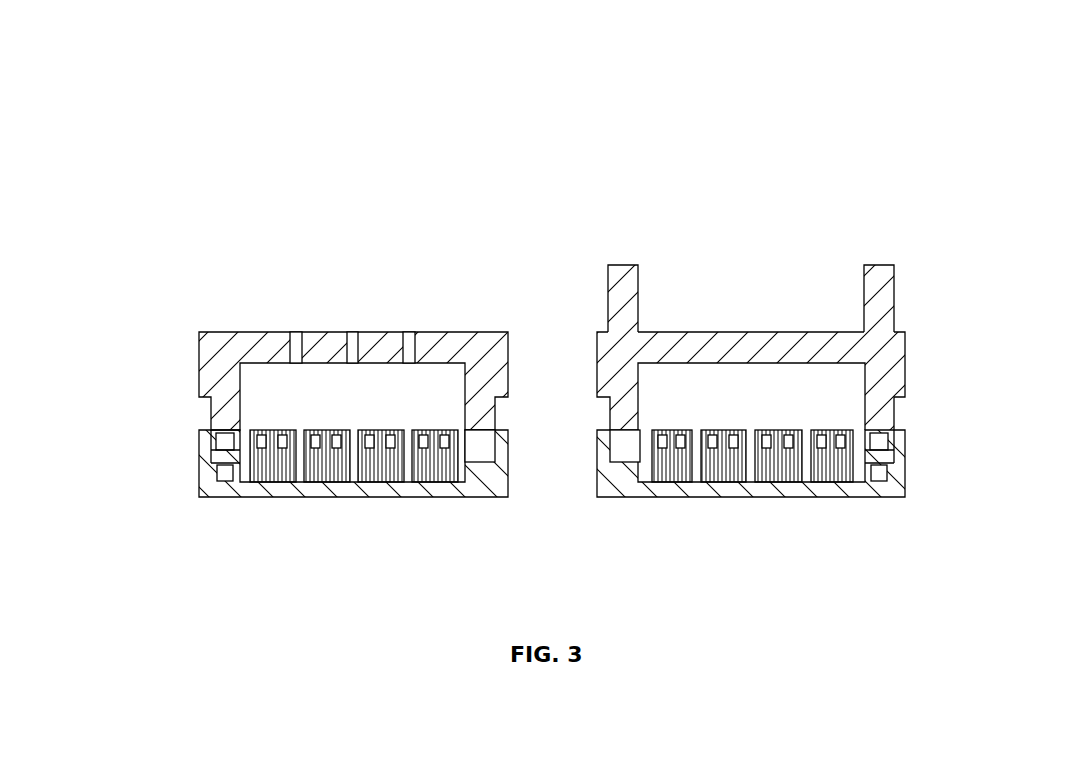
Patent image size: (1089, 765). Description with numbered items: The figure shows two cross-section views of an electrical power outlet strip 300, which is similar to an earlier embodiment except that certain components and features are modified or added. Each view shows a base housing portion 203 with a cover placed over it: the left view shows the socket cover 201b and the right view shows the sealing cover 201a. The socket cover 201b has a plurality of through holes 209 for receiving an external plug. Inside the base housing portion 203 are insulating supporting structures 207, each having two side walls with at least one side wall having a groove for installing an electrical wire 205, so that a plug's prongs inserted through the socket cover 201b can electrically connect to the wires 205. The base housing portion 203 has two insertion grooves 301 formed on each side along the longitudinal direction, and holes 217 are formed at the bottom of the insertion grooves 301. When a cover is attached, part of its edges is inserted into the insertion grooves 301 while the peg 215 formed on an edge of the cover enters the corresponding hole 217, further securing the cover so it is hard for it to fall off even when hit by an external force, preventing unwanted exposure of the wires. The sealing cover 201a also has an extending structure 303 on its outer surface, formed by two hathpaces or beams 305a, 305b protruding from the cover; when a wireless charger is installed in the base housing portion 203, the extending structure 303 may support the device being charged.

The electrical power outlet strip 300 is at (993, 113).
The sealing cover 201a is at (876, 330).
The socket cover 201b is at (200, 332).
The base housing portion 203 is at (615, 484).
The electrical wire 205 is at (357, 430).
The insulating supporting structure 207 is at (265, 430).
The through hole 209 is at (302, 336).
The peg 215 is at (205, 433).
The hole 217 is at (218, 483).
The insertion groove 301 is at (477, 450).
The extending structure 303 is at (883, 313).
The hathpace or beam 305a is at (640, 262).
The hathpace or beam 305b is at (893, 268).